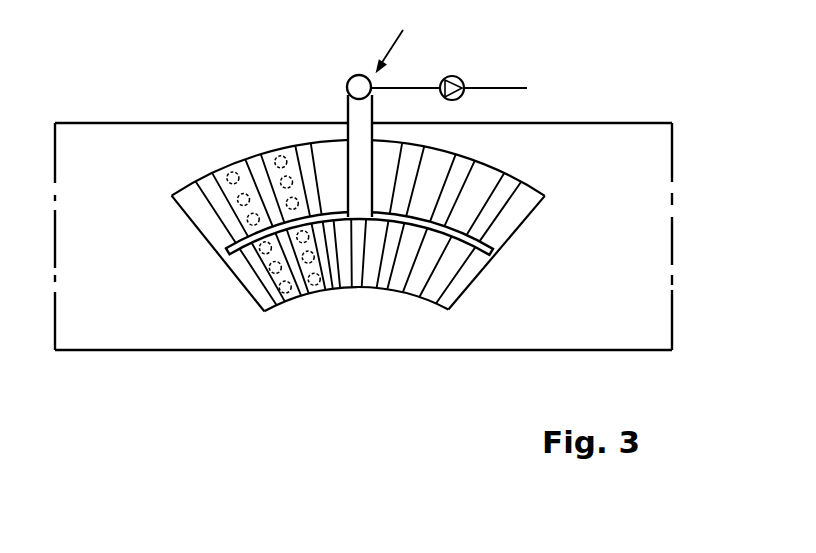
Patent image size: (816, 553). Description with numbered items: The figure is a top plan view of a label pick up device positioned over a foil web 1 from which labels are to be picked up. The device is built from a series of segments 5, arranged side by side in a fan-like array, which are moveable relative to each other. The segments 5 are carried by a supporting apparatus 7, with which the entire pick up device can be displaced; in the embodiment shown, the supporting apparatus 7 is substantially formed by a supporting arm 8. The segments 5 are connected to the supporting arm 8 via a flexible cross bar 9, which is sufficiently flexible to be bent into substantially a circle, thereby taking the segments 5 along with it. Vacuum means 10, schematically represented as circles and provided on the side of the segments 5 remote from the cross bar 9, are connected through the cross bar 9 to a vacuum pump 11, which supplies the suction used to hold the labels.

The foil web 1 is at (597, 318).
The segments 5 is at (527, 203).
The supporting apparatus 7 is at (396, 35).
The supporting arm 8 is at (347, 103).
The flexible cross bar 9 is at (485, 258).
The vacuum means 10 is at (232, 173).
The vacuum pump 11 is at (452, 76).